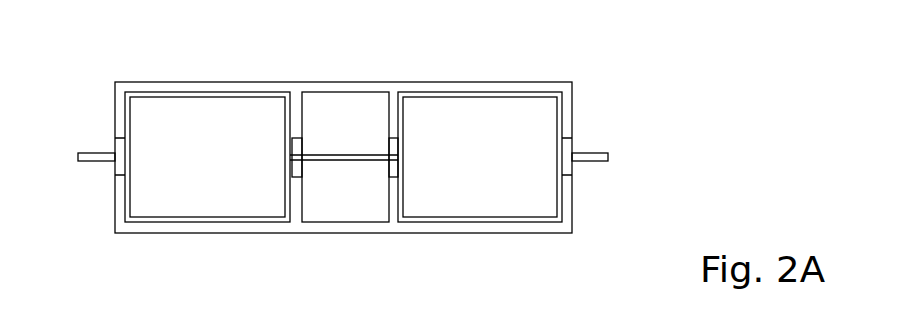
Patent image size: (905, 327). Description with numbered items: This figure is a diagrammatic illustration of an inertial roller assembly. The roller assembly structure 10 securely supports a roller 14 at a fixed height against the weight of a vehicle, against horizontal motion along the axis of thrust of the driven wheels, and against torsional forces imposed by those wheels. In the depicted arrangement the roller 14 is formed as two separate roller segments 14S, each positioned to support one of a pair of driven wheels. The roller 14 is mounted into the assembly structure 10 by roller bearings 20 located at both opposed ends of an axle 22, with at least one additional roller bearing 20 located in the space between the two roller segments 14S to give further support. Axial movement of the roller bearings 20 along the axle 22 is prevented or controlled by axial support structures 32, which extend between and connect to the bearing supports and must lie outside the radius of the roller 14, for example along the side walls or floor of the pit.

The roller assembly structure 10 is at (352, 141).
The roller 14 is at (472, 130).
The roller segments 14S is at (222, 172).
The roller bearings 20 is at (118, 166).
The axle 22 is at (88, 155).
The axial support structures 32 is at (160, 87).